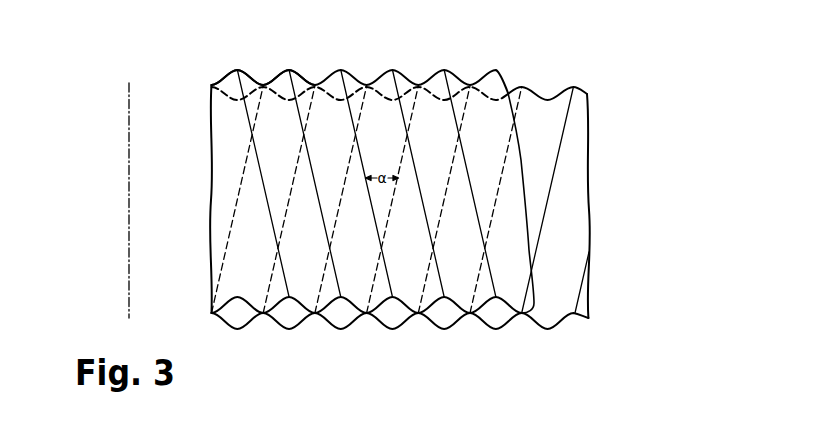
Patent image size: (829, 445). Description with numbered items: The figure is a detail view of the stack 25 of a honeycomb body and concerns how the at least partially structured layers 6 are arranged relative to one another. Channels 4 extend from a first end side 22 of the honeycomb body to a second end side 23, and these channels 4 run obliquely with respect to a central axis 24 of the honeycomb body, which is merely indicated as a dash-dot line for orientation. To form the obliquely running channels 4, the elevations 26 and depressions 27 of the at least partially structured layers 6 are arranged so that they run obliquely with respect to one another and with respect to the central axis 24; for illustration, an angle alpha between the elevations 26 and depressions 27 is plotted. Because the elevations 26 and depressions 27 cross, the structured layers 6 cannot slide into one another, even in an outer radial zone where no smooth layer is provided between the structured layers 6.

The channel 4 is at (498, 318).
The at least partially structured layer 6 is at (383, 77).
The first end side 22 is at (391, 322).
The second end side 23 is at (282, 78).
The central axis 24 is at (126, 204).
The stack 25 is at (619, 83).
The elevation 26 is at (235, 82).
The depression 27 is at (464, 83).